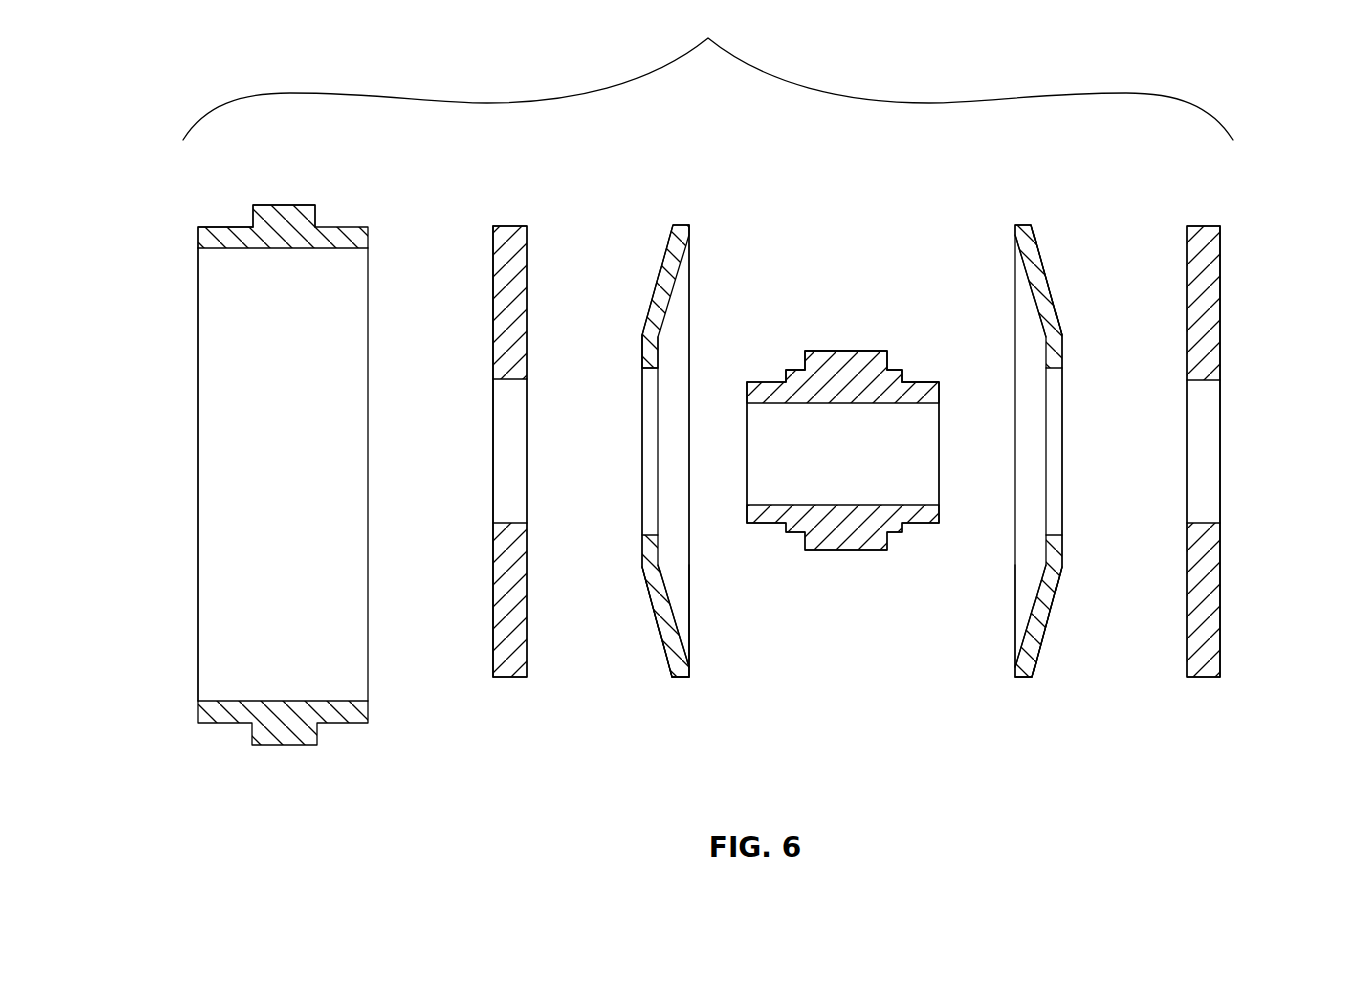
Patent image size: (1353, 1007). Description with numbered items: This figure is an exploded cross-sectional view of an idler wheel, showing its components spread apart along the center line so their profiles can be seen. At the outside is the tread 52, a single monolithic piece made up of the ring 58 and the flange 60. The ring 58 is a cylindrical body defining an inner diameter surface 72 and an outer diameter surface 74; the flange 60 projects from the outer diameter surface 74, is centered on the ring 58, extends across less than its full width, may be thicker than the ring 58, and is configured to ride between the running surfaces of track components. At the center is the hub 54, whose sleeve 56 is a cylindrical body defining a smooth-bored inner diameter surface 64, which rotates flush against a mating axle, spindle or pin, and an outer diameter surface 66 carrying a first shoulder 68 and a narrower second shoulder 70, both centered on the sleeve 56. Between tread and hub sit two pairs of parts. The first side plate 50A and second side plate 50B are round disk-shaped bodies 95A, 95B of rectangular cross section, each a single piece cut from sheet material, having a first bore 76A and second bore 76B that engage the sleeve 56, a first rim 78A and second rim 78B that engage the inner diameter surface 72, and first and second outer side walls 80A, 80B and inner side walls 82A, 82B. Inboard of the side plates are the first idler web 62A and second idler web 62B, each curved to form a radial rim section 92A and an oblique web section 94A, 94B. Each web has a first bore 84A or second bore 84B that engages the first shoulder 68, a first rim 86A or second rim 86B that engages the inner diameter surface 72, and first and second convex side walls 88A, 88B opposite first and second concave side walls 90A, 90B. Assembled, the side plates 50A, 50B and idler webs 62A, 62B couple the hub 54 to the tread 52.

The tread 52 is at (263, 447).
The hub 54 is at (842, 416).
The sleeve 56 is at (925, 383).
The ring 58 is at (225, 238).
The flange 60 is at (283, 213).
The first idler web 62A is at (666, 427).
The second idler web 62B is at (1037, 427).
The inner diameter surface 64 is at (747, 497).
The outer diameter surface 66 is at (770, 370).
The first shoulder 68 is at (892, 362).
The second shoulder 70 is at (876, 350).
The inner diameter surface 72 is at (233, 250).
The outer diameter surface 74 is at (347, 227).
The first bore 76A is at (512, 450).
The second bore 76B is at (1210, 445).
The first rim 78A is at (508, 419).
The second rim 78B is at (1201, 419).
The first outer side wall 80A is at (493, 332).
The second outer side wall 80B is at (1222, 290).
The first inner side wall 82A is at (528, 268).
The second inner side wall 82B is at (1187, 270).
The first bore 84A is at (650, 517).
The second bore 84B is at (1057, 460).
The first rim 86A is at (677, 680).
The second rim 86B is at (1028, 680).
The first convex side wall 88A is at (656, 605).
The second convex side wall 88B is at (1048, 620).
The first concave side wall 90A is at (680, 600).
The second concave side wall 90B is at (1017, 612).
The radial rim section 92A is at (643, 352).
The oblique web section 94A is at (689, 288).
The oblique web section 94B is at (1050, 302).
The round disk-shaped body 95A is at (500, 572).
The round disk-shaped body 95B is at (1222, 600).
The first side plate 50A is at (588, 427).
The second side plate 50B is at (1117, 427).